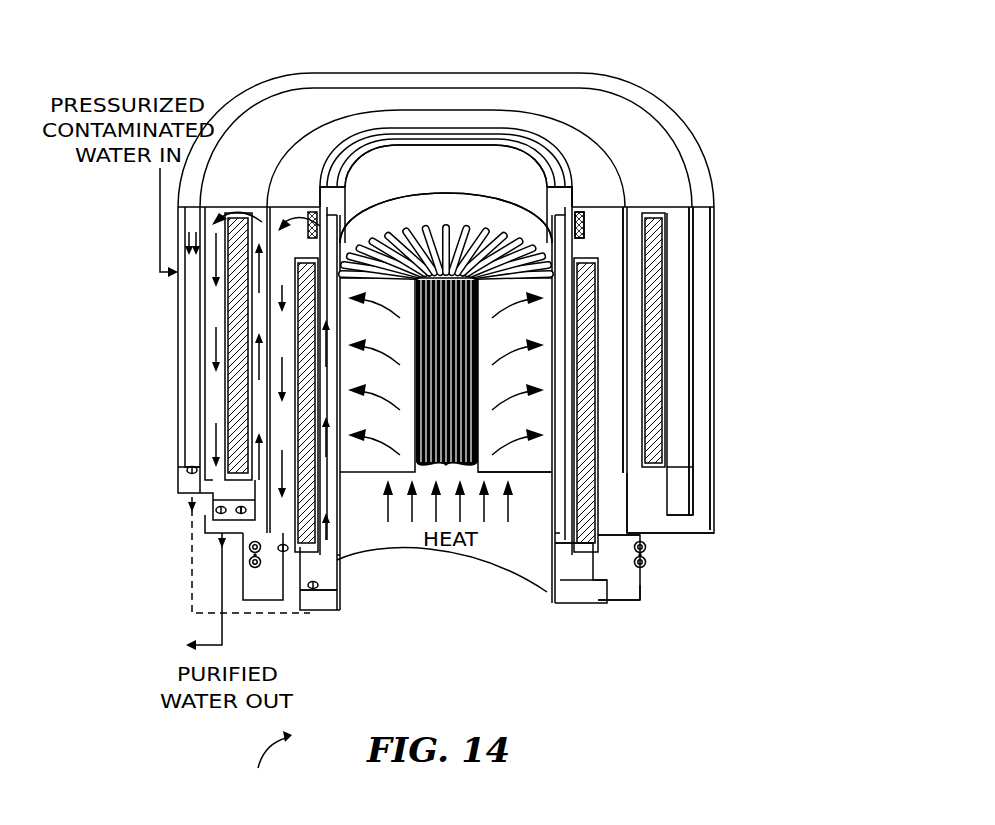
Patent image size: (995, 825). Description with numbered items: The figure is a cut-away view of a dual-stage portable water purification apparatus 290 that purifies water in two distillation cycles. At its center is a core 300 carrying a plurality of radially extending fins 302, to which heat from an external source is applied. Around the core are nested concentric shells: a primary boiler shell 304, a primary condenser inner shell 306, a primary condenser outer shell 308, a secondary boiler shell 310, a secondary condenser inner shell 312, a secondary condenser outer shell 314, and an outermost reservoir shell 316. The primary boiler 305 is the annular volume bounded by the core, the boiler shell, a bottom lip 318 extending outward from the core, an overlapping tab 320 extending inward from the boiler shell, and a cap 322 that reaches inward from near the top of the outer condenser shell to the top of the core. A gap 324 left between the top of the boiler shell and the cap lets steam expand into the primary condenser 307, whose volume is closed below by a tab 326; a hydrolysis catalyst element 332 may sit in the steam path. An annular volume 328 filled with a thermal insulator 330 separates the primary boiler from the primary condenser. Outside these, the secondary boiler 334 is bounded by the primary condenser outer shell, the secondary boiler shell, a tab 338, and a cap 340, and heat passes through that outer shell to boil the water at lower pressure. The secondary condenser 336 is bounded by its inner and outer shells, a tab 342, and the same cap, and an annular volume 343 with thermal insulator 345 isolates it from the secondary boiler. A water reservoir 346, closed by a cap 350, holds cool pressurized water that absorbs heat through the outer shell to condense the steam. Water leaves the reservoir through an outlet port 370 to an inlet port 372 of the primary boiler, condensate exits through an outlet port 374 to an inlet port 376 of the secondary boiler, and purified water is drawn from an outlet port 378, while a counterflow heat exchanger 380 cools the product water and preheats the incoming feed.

The dual-stage portable water purification apparatus 290 is at (264, 761).
The core 300 is at (360, 560).
The radially extending fins 302 is at (527, 465).
The primary boiler shell 304 is at (560, 533).
The primary boiler 305 is at (563, 540).
The primary condenser inner shell 306 is at (640, 597).
The primary condenser 307 is at (650, 553).
The primary condenser outer shell 308 is at (647, 537).
The secondary boiler shell 310 is at (640, 318).
The secondary condenser inner shell 312 is at (655, 262).
The secondary condenser outer shell 314 is at (708, 468).
The reservoir shell 316 is at (711, 375).
The bottom lip 318 is at (572, 587).
The overlapping tab 320 is at (593, 580).
The cap 322 is at (592, 212).
The gap 324 is at (612, 212).
The tab 326 is at (647, 590).
The annular volume 328 is at (558, 212).
The thermal insulator 330 is at (558, 212).
The hydrolysis catalyst element 332 is at (598, 232).
The secondary boiler 334 is at (670, 330).
The secondary condenser 336 is at (678, 372).
The tab 338 is at (660, 533).
The cap 340 is at (627, 212).
The tab 342 is at (677, 503).
The annular volume 343 is at (633, 360).
The thermal insulator 345 is at (633, 360).
The water reservoir 346 is at (700, 400).
The cap 350 is at (642, 215).
The outlet port 370 is at (178, 470).
The inlet port 372 is at (288, 555).
The outlet port 374 is at (300, 613).
The inlet port 376 is at (240, 522).
The outlet port 378 is at (215, 508).
The counterflow heat exchanger 380 is at (643, 563).